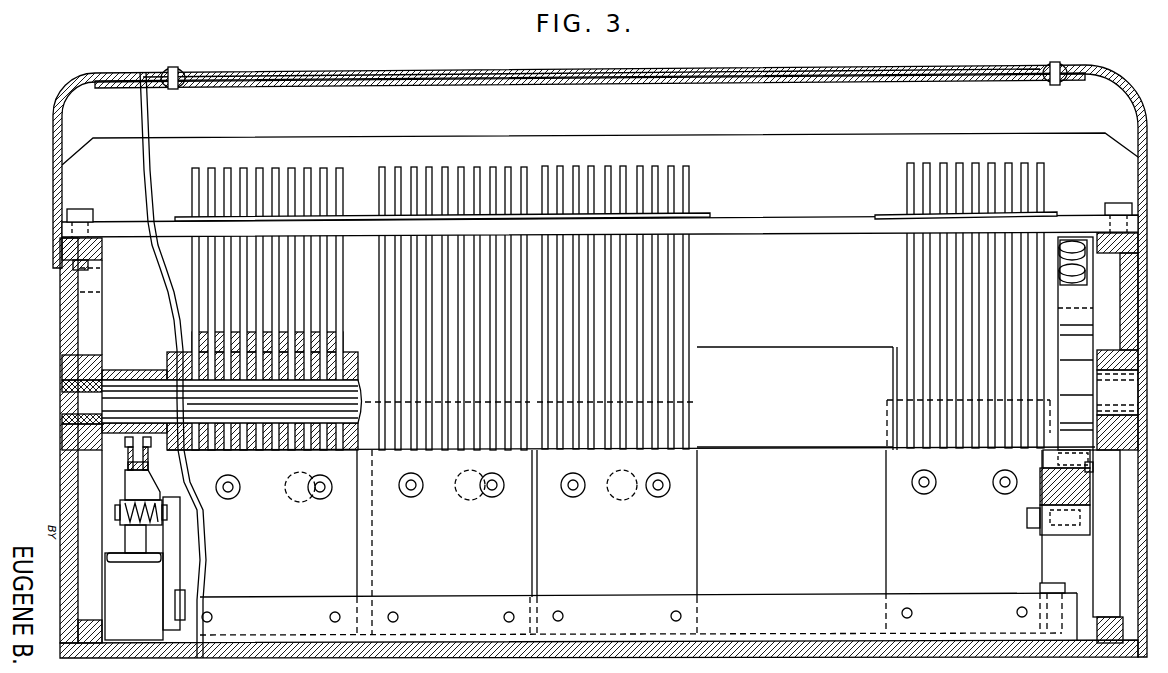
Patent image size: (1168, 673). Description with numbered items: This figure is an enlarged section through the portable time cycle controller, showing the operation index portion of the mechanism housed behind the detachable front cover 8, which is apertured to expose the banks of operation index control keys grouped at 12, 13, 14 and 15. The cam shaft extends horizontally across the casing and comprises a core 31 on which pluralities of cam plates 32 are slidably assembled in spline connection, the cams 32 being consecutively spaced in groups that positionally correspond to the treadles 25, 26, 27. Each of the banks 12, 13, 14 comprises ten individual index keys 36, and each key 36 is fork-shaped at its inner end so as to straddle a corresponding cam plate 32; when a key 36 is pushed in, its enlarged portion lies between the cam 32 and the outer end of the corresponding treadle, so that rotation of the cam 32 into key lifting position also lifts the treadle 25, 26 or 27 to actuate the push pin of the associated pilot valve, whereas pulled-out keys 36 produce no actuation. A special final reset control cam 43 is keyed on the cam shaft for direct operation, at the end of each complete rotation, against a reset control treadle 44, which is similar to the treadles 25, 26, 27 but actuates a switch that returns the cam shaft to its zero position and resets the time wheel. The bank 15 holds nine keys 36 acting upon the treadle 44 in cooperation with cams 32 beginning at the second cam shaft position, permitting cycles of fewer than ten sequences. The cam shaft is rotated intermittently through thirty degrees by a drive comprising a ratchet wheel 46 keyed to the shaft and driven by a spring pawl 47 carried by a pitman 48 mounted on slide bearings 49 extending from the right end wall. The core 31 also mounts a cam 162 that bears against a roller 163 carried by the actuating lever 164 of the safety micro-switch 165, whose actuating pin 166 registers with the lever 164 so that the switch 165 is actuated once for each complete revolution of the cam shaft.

The front cover 8 is at (1100, 71).
The bank of index keys 12 is at (272, 166).
The bank of index keys 13 is at (447, 165).
The bank of index keys 14 is at (608, 165).
The bank of keys 15 is at (951, 162).
The index key 36 is at (226, 167).
The core 31 is at (108, 405).
The cam plate 32 is at (275, 452).
The treadle 25 is at (279, 542).
The treadle 26 is at (451, 518).
The treadle 27 is at (617, 518).
The final reset control cam 43 is at (893, 378).
The reset control treadle 44 is at (974, 516).
The ratchet wheel 46 is at (1076, 352).
The spring pawl 47 is at (1089, 469).
The pitman 48 is at (1068, 488).
The slide bearing 49 is at (1093, 522).
The cam 162 is at (140, 370).
The roller 163 is at (128, 455).
The actuating lever 164 is at (133, 490).
The electrical snap switch 165 is at (145, 568).
The actuating pin 166 is at (140, 538).